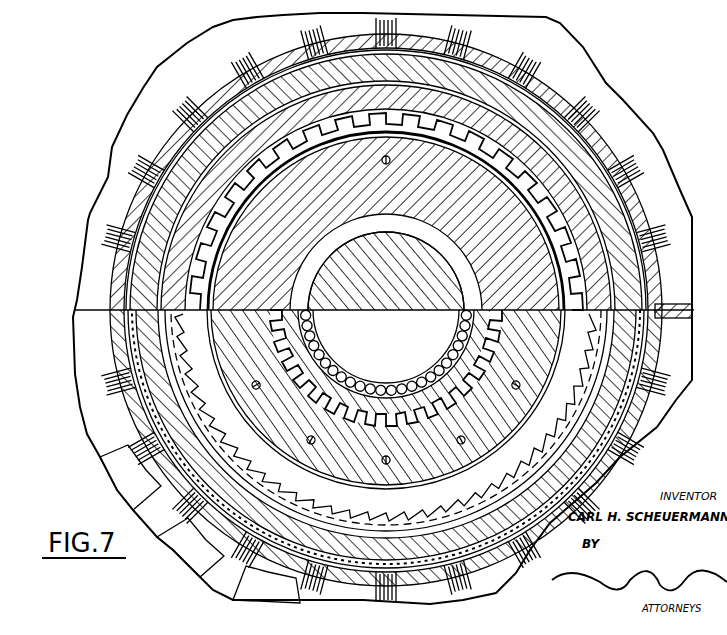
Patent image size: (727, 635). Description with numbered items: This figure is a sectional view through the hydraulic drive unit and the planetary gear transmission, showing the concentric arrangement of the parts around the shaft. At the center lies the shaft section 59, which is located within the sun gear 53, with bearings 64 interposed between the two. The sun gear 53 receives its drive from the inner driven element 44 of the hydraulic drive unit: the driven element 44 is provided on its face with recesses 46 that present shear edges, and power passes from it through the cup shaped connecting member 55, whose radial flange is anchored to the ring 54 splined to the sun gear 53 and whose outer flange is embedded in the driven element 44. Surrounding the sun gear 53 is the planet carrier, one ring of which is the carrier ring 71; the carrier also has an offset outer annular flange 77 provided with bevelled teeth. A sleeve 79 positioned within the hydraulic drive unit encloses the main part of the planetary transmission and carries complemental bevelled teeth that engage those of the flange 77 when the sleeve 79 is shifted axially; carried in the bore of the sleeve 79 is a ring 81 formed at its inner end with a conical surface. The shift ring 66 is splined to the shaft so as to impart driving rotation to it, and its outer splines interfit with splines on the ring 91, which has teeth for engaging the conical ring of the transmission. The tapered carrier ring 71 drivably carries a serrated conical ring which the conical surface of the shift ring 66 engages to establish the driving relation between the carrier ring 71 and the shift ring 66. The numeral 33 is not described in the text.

The housing 33 is at (214, 566).
The inner driven element 44 is at (282, 590).
The recesses 46 is at (400, 38).
The sun gear 53 is at (353, 427).
The ring 54 is at (440, 470).
The cup shaped connecting member 55 is at (238, 514).
The shaft section 59 is at (332, 330).
The bearings 64 is at (506, 338).
The shift ring 66 is at (216, 218).
The carrier ring 71 is at (387, 178).
The outer annular flange 77 is at (201, 464).
The sleeve 79 is at (382, 56).
The ring 81 is at (300, 96).
The ring 91 is at (262, 142).